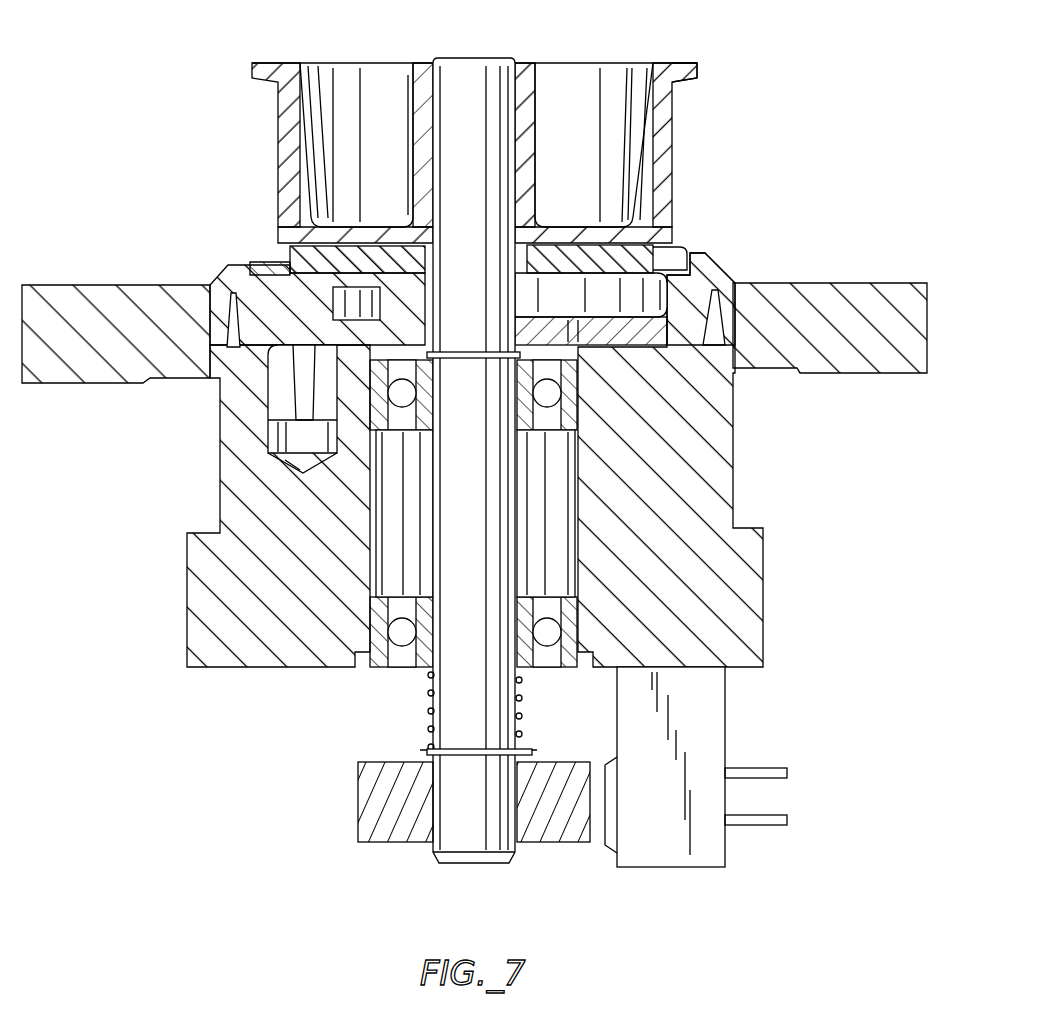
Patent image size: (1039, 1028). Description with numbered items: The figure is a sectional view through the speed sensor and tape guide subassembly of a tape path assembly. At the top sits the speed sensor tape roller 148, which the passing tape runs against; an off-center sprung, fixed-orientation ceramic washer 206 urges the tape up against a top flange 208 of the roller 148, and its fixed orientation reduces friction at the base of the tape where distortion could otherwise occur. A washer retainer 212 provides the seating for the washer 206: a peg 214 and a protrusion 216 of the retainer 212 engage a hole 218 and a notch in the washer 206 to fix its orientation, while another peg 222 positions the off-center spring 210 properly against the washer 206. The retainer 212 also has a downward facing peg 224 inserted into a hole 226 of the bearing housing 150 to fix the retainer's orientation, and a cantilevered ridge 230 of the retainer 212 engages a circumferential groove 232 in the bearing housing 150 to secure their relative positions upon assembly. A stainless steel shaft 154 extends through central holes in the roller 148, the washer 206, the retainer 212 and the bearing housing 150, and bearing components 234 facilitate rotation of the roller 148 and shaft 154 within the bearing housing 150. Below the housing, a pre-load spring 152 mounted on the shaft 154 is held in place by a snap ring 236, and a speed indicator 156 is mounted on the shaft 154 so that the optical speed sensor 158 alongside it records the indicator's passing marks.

The speed sensor tape roller 148 is at (272, 152).
The bearing housing 150 is at (188, 585).
The pre-load spring 152 is at (426, 709).
The shaft 154 is at (468, 58).
The speed indicator 156 is at (357, 832).
The optical speed sensor 158 is at (680, 868).
The ceramic washer 206 is at (272, 243).
The top flange 208 is at (690, 68).
The off-center spring 210 is at (425, 292).
The washer retainer 212 is at (230, 272).
The peg 214 is at (250, 256).
The protrusion 216 is at (670, 265).
The hole 218 is at (315, 228).
The peg 222 is at (422, 304).
The downward facing peg 224 is at (296, 418).
The hole 226 is at (278, 440).
The cantilevered ridge 230 is at (757, 352).
The circumferential groove 232 is at (735, 335).
The bearing components 234 is at (577, 440).
The snap ring 236 is at (424, 752).